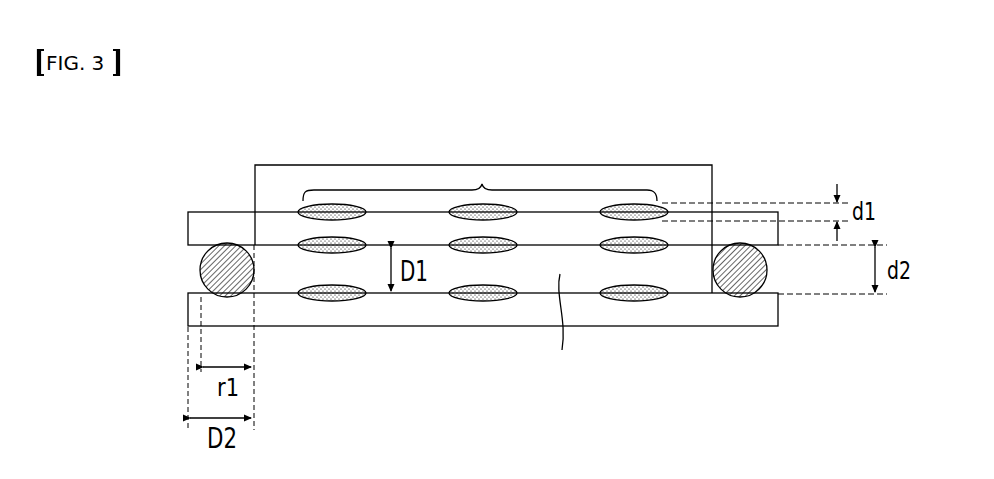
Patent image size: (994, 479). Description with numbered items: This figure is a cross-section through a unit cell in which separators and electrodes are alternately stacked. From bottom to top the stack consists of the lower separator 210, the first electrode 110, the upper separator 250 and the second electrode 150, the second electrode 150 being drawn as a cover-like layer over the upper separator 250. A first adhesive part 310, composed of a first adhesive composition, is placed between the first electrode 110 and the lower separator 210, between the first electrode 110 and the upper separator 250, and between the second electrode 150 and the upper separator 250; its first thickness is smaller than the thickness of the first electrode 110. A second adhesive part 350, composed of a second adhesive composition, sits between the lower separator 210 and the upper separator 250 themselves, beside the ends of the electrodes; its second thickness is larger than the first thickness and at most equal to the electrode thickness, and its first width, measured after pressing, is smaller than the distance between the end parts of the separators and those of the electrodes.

The first electrode 110 is at (559, 328).
The second electrode 150 is at (283, 178).
The lower separator 210 is at (204, 309).
The upper separator 250 is at (202, 229).
The first adhesive part 310 is at (482, 184).
The second adhesive part 350 is at (216, 269).